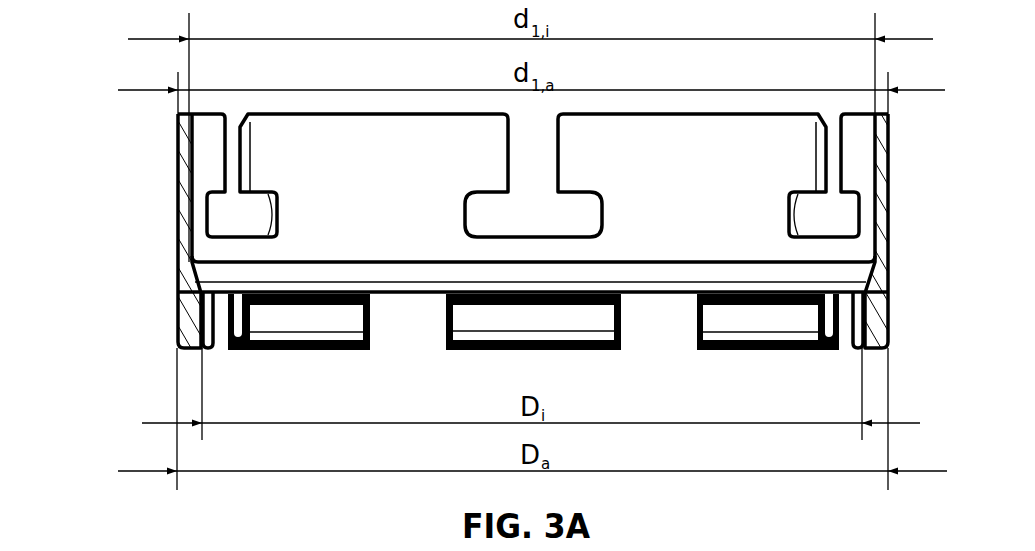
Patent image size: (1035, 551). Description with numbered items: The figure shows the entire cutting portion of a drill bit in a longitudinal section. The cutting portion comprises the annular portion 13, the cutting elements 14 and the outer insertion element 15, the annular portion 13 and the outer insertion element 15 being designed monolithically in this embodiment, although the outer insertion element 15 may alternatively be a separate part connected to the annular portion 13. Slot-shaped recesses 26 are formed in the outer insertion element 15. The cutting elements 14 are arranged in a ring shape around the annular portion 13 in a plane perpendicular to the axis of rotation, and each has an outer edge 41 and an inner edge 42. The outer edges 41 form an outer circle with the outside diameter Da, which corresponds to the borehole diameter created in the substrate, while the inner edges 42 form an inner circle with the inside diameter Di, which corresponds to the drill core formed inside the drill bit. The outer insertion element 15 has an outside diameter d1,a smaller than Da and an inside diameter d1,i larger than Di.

The outer insertion element 15 is at (178, 183).
The annular portion 13 is at (188, 281).
The slot-shaped recess 26 is at (538, 192).
The cutting element 14 is at (302, 312).
The outer edge 41 is at (892, 307).
The inner edge 42 is at (857, 330).